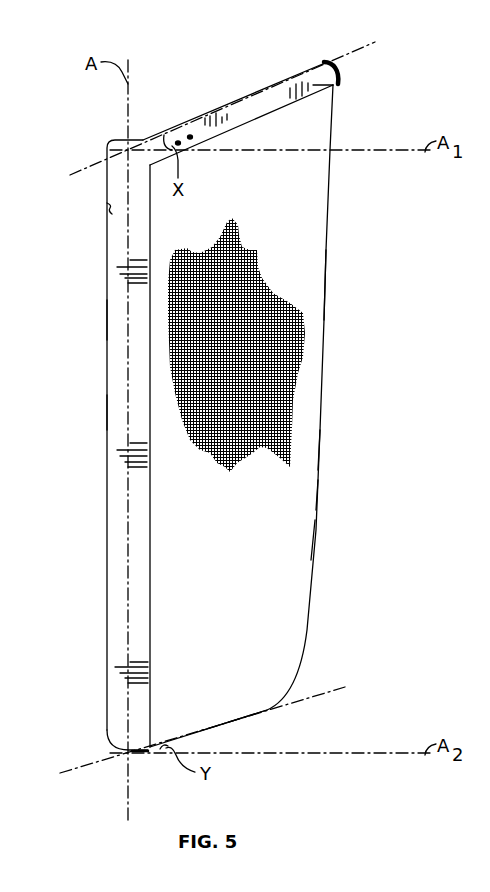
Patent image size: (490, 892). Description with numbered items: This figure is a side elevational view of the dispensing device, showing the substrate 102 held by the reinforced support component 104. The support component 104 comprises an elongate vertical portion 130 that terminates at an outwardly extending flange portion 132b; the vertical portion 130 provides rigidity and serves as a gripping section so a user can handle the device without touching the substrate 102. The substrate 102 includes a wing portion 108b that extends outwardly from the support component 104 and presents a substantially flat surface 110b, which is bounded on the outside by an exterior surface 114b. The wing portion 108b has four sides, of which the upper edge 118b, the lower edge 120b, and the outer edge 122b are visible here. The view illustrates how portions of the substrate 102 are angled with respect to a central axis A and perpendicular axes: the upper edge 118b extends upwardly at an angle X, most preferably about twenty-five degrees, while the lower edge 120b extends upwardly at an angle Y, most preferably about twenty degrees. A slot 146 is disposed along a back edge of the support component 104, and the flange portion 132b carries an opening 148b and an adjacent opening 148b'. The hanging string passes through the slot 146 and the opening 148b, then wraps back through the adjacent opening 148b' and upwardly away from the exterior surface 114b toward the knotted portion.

The substrate 102 is at (317, 176).
The reinforced support component 104 is at (110, 413).
The wing portion 108b is at (307, 451).
The substantially flat surface 110b is at (307, 493).
The exterior surface 114b is at (298, 535).
The upper edge 118b is at (275, 112).
The lower edge 120b is at (233, 722).
The outer edge 122b is at (325, 316).
The elongate vertical portion 130 is at (110, 314).
The flange portion 132b is at (313, 85).
The slot 146 is at (101, 209).
The opening 148b is at (200, 86).
The adjacent opening 148b' is at (160, 110).